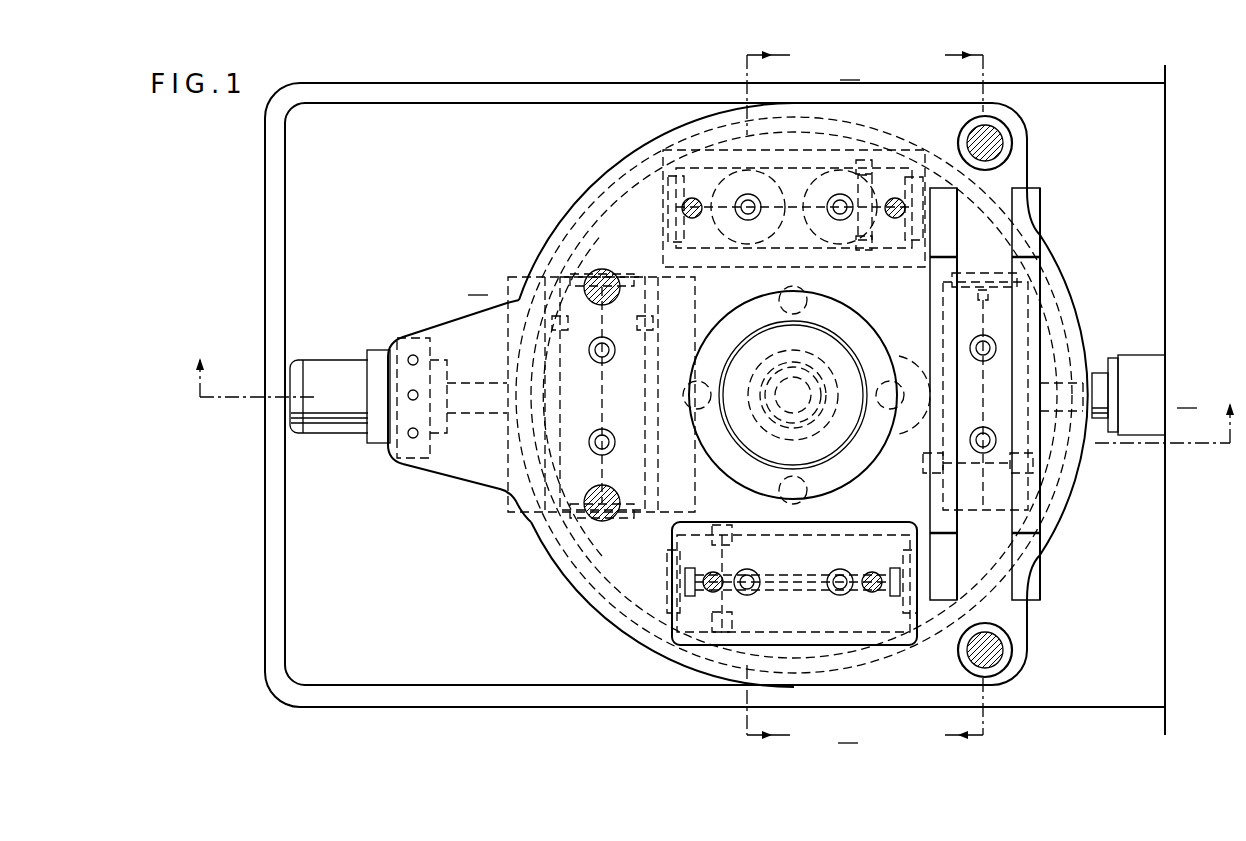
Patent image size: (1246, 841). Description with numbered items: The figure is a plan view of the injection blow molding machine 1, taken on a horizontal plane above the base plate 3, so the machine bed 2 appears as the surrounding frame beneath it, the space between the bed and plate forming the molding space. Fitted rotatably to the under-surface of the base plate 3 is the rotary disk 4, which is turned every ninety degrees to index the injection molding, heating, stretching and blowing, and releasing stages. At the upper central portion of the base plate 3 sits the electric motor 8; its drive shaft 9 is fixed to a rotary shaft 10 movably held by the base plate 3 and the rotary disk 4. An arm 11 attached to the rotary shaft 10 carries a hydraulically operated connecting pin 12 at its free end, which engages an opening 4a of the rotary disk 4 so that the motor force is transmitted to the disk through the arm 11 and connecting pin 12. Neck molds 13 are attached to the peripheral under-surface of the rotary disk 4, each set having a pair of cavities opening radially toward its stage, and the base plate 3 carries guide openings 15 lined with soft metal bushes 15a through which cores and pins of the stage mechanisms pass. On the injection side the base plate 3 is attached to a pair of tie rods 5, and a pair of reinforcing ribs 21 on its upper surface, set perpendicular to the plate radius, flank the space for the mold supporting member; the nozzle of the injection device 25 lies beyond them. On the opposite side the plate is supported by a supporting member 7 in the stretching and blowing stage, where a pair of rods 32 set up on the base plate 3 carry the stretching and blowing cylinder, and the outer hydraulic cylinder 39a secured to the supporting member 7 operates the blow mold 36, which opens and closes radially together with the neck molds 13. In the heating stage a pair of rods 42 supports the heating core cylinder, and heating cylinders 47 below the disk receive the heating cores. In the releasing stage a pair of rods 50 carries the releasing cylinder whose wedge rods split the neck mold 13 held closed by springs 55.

The molding machine 1 is at (610, 143).
The machine bed 2 is at (292, 208).
The base plate 3 is at (562, 212).
The rotary disk 4 is at (622, 227).
The opening 4a is at (790, 297).
The tie rods 5 is at (992, 150).
The supporting member 7 is at (413, 345).
The electric motor 8 is at (757, 355).
The drive shaft 9 is at (797, 392).
The rotary shaft 10 is at (827, 373).
The arm 11 is at (870, 365).
The connecting pin 12 is at (893, 437).
The neck molds 13 is at (545, 515).
The guide openings 15 is at (598, 358).
The soft metal bushes 15a is at (606, 358).
The reinforcing ribs 21 is at (930, 257).
The injection device 25 is at (1143, 370).
The rods 32 is at (598, 278).
The blow mold 36 is at (498, 489).
The hydraulic cylinder 39a is at (330, 420).
The rods 42 is at (690, 198).
The heating cylinder 47 is at (748, 185).
The rods 50 is at (706, 574).
The springs 55 is at (722, 530).